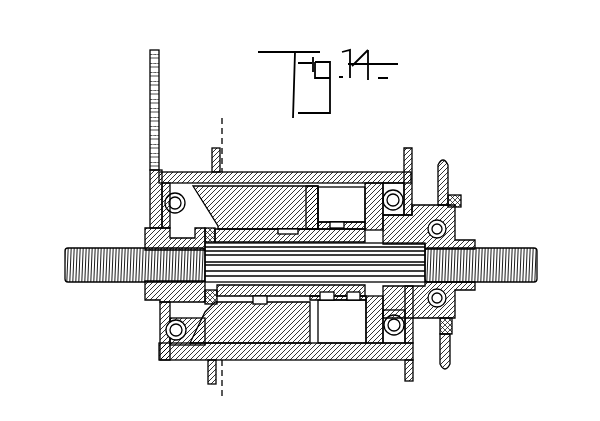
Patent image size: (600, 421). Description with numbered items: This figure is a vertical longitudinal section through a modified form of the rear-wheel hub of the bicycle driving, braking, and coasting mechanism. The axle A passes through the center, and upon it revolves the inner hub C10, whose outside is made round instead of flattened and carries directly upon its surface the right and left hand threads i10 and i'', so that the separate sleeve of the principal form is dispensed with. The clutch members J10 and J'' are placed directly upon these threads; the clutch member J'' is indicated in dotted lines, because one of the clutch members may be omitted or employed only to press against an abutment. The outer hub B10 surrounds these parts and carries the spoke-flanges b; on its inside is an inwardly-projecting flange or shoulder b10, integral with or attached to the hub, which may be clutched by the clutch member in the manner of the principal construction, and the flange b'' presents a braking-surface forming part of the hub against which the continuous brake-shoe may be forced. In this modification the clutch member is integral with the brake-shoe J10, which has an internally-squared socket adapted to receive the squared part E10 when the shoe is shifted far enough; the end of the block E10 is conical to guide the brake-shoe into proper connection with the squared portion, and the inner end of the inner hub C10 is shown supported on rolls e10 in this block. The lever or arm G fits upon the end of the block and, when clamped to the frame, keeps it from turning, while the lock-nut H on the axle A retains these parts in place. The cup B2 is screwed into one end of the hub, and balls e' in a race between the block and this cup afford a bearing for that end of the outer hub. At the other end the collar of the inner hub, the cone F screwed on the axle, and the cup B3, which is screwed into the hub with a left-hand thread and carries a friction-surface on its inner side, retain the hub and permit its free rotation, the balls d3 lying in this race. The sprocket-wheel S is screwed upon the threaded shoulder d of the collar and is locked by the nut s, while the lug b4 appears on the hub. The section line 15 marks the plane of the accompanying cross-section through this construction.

The lever or arm G is at (152, 122).
The lock-nut H is at (150, 245).
The block or hub E10 is at (150, 233).
The rolls e10 is at (147, 300).
The outer hub B10 is at (290, 180).
The spoke-flanges b is at (310, 171).
The section line 15 is at (222, 257).
The flange b'' is at (149, 205).
The clutch member and brake-shoe J10 is at (251, 200).
The inwardly-projecting flange or shoulder b10 is at (317, 192).
The clutch member J'' is at (349, 181).
The cone F is at (457, 237).
The threaded shoulder d is at (449, 192).
The axle A is at (402, 265).
The cup B2 is at (182, 355).
The balls e' is at (155, 332).
The inner hub C10 is at (290, 292).
The right-hand thread i10 is at (262, 303).
The left-hand thread i'' is at (338, 342).
The cup B3 is at (377, 352).
The flange lug b4 is at (406, 284).
The ball bearing d3 is at (456, 300).
The nut s is at (458, 327).
The sprocket-wheel S is at (451, 358).